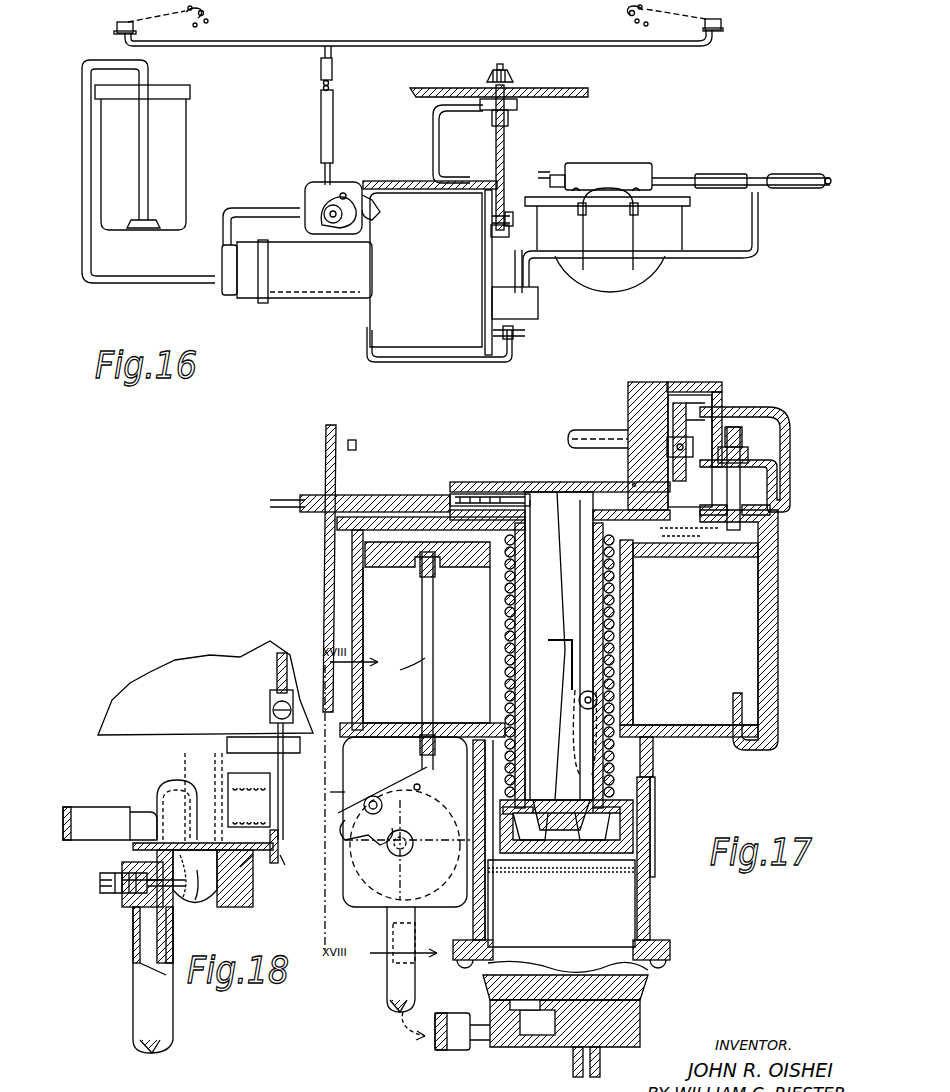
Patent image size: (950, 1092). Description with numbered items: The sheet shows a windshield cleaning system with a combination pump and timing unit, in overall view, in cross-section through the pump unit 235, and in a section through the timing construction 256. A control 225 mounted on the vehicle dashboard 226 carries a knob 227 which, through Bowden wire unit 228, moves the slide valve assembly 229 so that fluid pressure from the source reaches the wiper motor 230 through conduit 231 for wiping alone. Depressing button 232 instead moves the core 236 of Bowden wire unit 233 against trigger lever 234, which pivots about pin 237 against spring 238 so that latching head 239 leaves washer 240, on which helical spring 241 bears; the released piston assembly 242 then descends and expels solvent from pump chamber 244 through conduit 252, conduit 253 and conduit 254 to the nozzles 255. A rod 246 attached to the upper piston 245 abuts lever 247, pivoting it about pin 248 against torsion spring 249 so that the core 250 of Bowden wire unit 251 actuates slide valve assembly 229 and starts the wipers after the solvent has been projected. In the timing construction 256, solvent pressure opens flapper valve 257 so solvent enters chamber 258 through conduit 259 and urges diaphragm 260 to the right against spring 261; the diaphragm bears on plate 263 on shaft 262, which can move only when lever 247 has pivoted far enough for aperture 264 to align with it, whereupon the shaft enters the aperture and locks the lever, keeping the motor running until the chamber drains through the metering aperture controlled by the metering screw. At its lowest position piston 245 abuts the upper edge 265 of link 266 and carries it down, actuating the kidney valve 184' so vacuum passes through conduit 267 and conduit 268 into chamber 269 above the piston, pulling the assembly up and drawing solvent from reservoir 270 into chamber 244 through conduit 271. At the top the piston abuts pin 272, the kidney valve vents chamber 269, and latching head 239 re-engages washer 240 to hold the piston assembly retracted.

In FIG. 17, the kidney valve 184' is at (675, 420).
In FIG. 16, the control 225 is at (522, 106).
In FIG. 16, the vehicle dashboard 226 is at (560, 88).
In FIG. 16, the knob 227 is at (513, 77).
In FIG. 16, the Bowden wire unit 228 is at (445, 152).
In FIG. 16, the slide valve assembly 229 is at (625, 165).
In FIG. 16, the motor 230 is at (650, 275).
In FIG. 16, the conduit 231 is at (725, 178).
In FIG. 16, the button 232 is at (497, 67).
In FIG. 16, the Bowden wire unit 233 is at (505, 162).
In FIG. 17, the Bowden wire unit 233 is at (312, 500).
In FIG. 17, the trigger lever 234 is at (552, 588).
In FIG. 16, the pump unit 235 is at (320, 303).
In FIG. 17, the pump unit 235 is at (657, 802).
In FIG. 17, the core 236 is at (283, 505).
In FIG. 17, the pin 237 is at (588, 691).
In FIG. 17, the spring 238 is at (567, 633).
In FIG. 17, the latching head 239 is at (574, 823).
In FIG. 17, the washer 240 is at (530, 829).
In FIG. 17, the helical spring 241 is at (630, 630).
In FIG. 17, the piston assembly 242 is at (637, 662).
In FIG. 17, the pump chamber 244 is at (565, 953).
In FIG. 17, the upper piston 245 is at (467, 560).
In FIG. 16, the rod 246 is at (372, 212).
In FIG. 17, the rod 246 is at (398, 672).
In FIG. 16, the lever 247 is at (349, 230).
In FIG. 17, the lever 247 is at (404, 833).
In FIG. 18, the lever 247 is at (281, 862).
In FIG. 17, the pin 248 is at (378, 842).
In FIG. 18, the pin 248 is at (280, 808).
In FIG. 17, the torsion spring 249 is at (372, 795).
In FIG. 18, the torsion spring 249 is at (263, 788).
In FIG. 16, the core 250 is at (338, 183).
In FIG. 17, the core 250 is at (330, 795).
In FIG. 16, the Bowden wire unit 251 is at (400, 181).
In FIG. 17, the Bowden wire unit 251 is at (330, 573).
In FIG. 18, the Bowden wire unit 251 is at (278, 690).
In FIG. 16, the conduit 252 is at (250, 205).
In FIG. 17, the conduit 252 is at (387, 990).
In FIG. 18, the conduit 252 is at (163, 1022).
In FIG. 16, the conduit 253 is at (331, 128).
In FIG. 18, the conduit 253 is at (90, 777).
In FIG. 16, the conduit 254 is at (362, 41).
In FIG. 16, the nozzles 255 is at (116, 27).
In FIG. 17, the timing construction 256 is at (350, 906).
In FIG. 18, the timing construction 256 is at (168, 787).
In FIG. 18, the flapper valve 257 is at (183, 898).
In FIG. 18, the chamber 258 is at (181, 791).
In FIG. 18, the conduit 259 is at (150, 818).
In FIG. 18, the diaphragm 260 is at (197, 870).
In FIG. 18, the spring 261 is at (215, 798).
In FIG. 18, the shaft 262 is at (240, 868).
In FIG. 18, the plate 263 is at (160, 888).
In FIG. 17, the aperture 264 is at (422, 785).
In FIG. 18, the aperture 264 is at (107, 894).
In FIG. 17, the upper edge 265 is at (737, 693).
In FIG. 17, the link 266 is at (780, 660).
In FIG. 16, the conduit 267 is at (745, 258).
In FIG. 17, the conduit 267 is at (588, 430).
In FIG. 17, the conduit 268 is at (630, 482).
In FIG. 17, the chamber 269 is at (683, 541).
In FIG. 16, the reservoir 270 is at (178, 157).
In FIG. 16, the conduit 271 is at (160, 282).
In FIG. 17, the conduit 271 is at (605, 1068).
In FIG. 17, the pin 272 is at (744, 488).